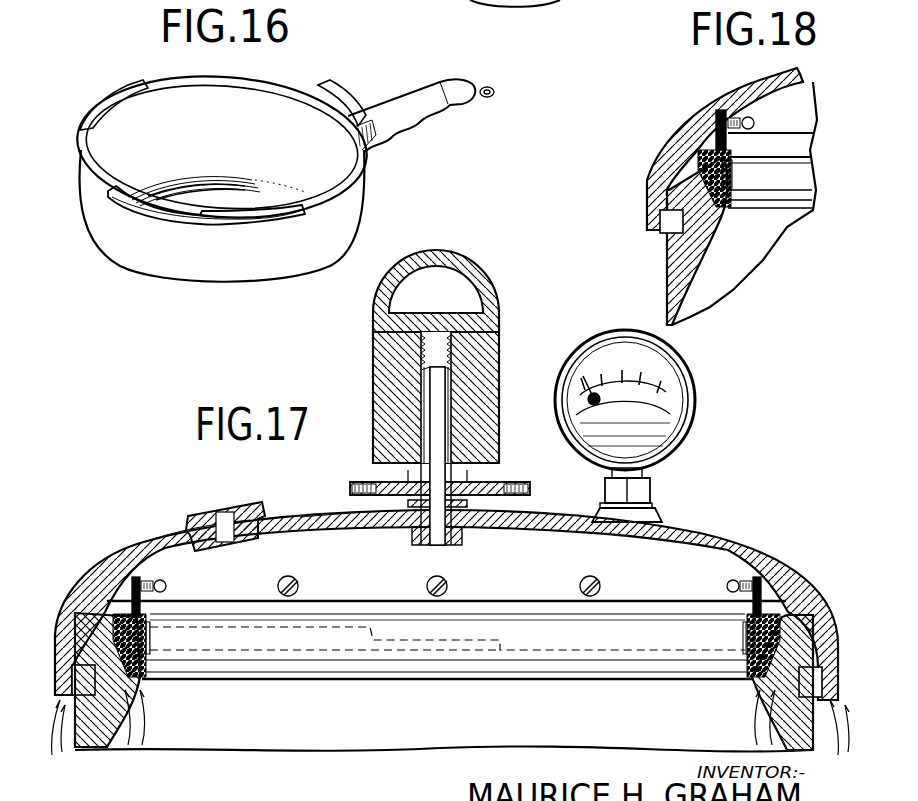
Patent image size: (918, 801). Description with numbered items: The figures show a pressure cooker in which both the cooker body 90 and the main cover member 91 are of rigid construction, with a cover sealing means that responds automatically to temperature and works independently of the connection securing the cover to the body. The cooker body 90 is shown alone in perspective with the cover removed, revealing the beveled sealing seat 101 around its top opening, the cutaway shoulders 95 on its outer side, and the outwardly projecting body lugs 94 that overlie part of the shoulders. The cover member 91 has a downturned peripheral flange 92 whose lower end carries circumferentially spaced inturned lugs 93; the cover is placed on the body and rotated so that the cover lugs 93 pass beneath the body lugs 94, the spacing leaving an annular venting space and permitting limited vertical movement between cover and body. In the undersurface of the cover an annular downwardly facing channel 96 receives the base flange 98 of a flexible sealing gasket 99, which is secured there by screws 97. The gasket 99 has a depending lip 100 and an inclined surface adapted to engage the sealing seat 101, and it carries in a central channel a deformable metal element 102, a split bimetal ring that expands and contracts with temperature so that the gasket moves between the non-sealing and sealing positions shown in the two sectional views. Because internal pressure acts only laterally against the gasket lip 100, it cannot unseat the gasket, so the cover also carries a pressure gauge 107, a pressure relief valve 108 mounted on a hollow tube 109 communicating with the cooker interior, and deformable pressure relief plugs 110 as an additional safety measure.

In FIG. 16, the cooker body 90 is at (330, 207).
In FIG. 17, the cover member 91 is at (308, 517).
In FIG. 18, the peripheral flange 92 is at (686, 132).
In FIG. 17, the peripheral flange 92 is at (85, 602).
In FIG. 18, the inturned lugs 93 is at (672, 220).
In FIG. 17, the inturned lugs 93 is at (84, 700).
In FIG. 16, the body lugs 94 is at (254, 212).
In FIG. 18, the body lugs 94 is at (664, 235).
In FIG. 17, the body lugs 94 is at (108, 700).
In FIG. 16, the cutaway shoulders 95 is at (172, 214).
In FIG. 17, the cutaway shoulders 95 is at (95, 700).
In FIG. 17, the annular channel 96 is at (125, 550).
In FIG. 17, the screws 97 is at (160, 580).
In FIG. 17, the base flange 98 is at (140, 612).
In FIG. 18, the sealing gasket 99 is at (800, 200).
In FIG. 17, the sealing gasket 99 is at (150, 618).
In FIG. 18, the depending lip 100 is at (757, 182).
In FIG. 17, the depending lip 100 is at (288, 660).
In FIG. 16, the sealing seat 101 is at (252, 86).
In FIG. 18, the sealing seat 101 is at (745, 215).
In FIG. 17, the sealing seat 101 is at (112, 580).
In FIG. 18, the deformable metal element 102 is at (792, 172).
In FIG. 17, the deformable metal element 102 is at (152, 636).
In FIG. 17, the pressure gauge 107 is at (670, 448).
In FIG. 17, the pressure relief valve 108 is at (375, 365).
In FIG. 17, the hollow tube 109 is at (470, 470).
In FIG. 17, the pressure relief plugs 110 is at (228, 518).